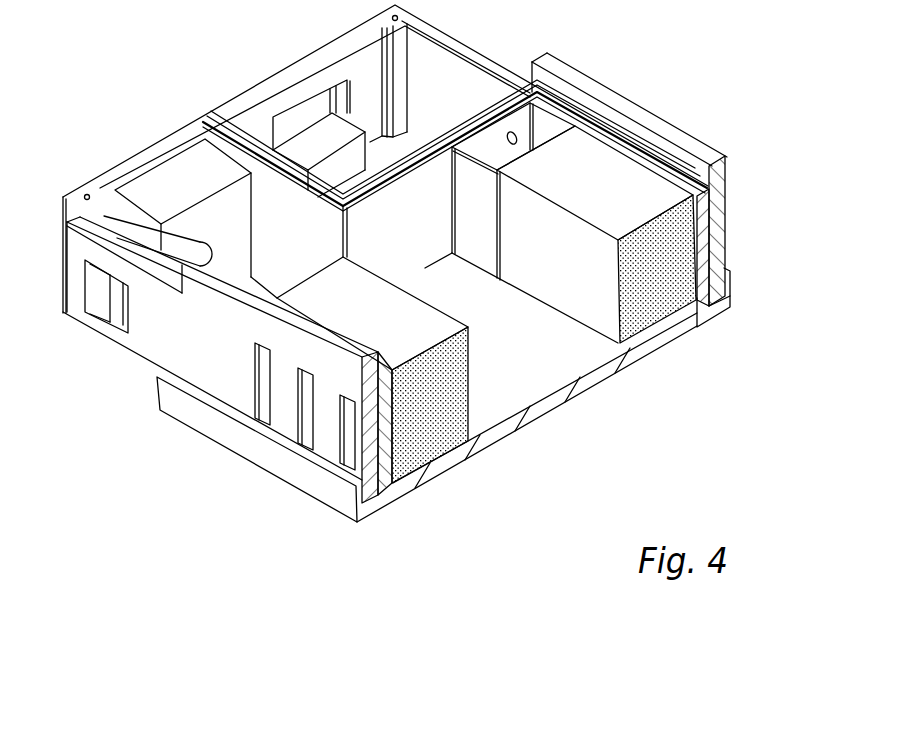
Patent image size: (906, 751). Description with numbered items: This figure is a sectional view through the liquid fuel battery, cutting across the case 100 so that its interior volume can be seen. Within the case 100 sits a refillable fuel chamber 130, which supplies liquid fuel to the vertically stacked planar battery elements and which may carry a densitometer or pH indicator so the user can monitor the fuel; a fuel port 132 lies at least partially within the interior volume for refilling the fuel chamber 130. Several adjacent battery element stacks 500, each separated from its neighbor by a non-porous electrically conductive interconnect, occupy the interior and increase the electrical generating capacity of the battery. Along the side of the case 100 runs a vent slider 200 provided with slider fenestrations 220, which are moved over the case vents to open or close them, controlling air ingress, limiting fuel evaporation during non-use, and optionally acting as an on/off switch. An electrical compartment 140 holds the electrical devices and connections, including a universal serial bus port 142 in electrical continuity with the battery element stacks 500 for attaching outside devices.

The case 100 is at (320, 47).
The fuel chamber 130 is at (525, 367).
The fuel port 132 is at (215, 248).
The electrical compartment 140 is at (384, 158).
The universal serial bus (USB port) 142 is at (298, 95).
The vent slider 200 is at (727, 230).
The slider fenestrations 220 is at (316, 430).
The battery element stack 500 is at (598, 193).